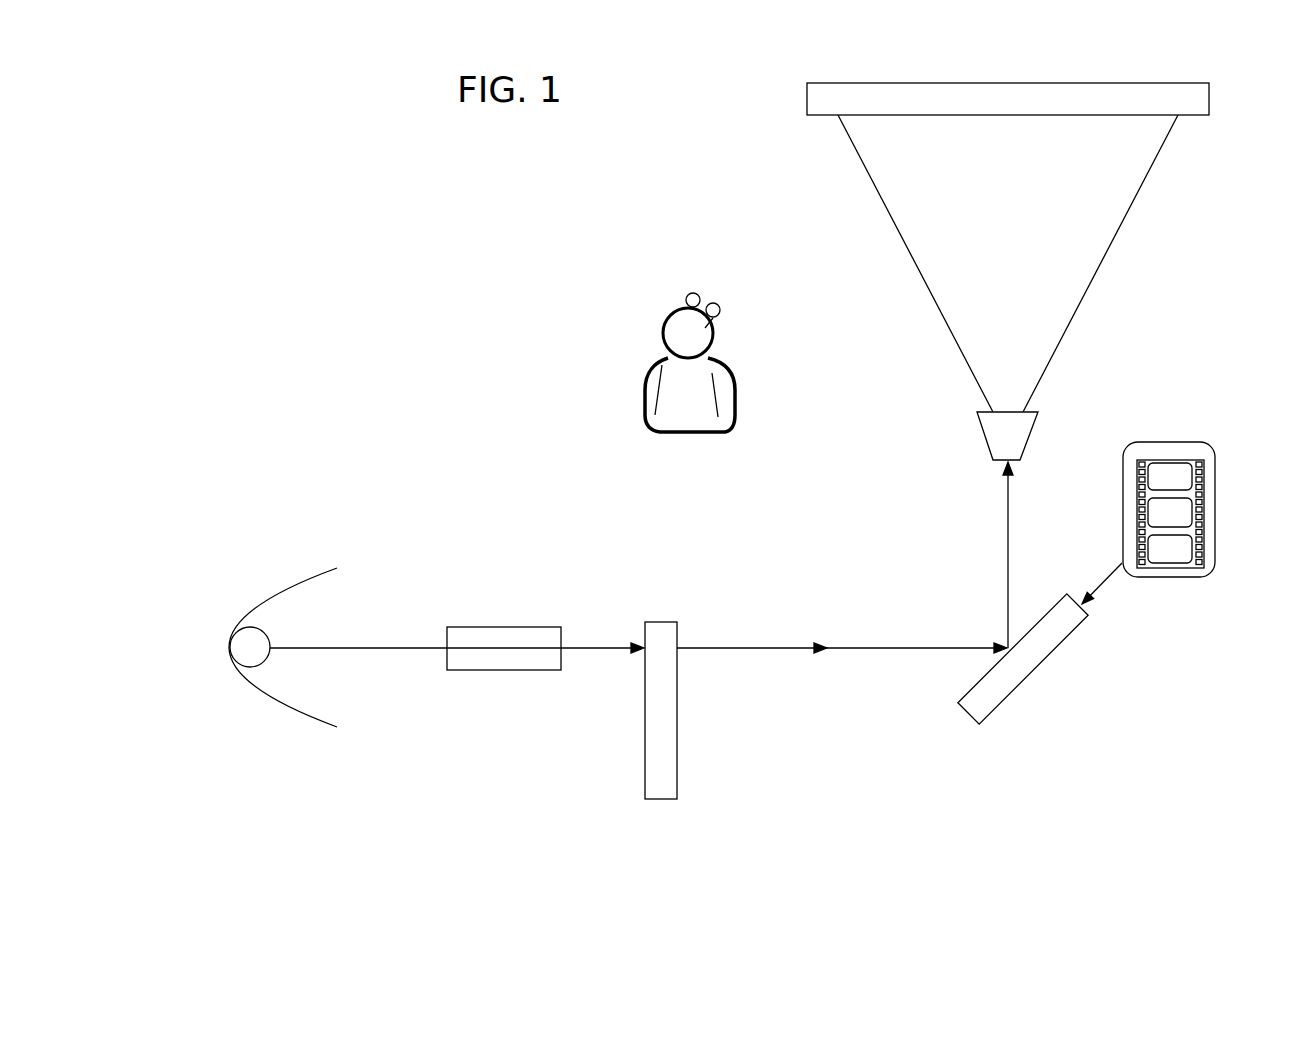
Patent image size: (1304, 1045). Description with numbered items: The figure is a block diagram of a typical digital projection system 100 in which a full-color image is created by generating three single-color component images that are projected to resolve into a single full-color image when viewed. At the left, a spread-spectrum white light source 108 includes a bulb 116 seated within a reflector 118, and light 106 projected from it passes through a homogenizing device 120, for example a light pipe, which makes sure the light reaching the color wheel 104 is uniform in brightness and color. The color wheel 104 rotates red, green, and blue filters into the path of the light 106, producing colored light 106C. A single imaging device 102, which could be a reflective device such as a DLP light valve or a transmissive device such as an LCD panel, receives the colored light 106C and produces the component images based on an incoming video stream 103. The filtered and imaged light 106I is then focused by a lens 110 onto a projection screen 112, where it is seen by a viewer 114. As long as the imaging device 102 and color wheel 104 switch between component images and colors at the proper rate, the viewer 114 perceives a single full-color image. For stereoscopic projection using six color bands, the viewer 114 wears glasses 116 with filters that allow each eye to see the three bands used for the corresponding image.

The digital projection system 100 is at (400, 201).
The imaging device 102 is at (1048, 688).
The incoming video stream 103 is at (1215, 540).
The color wheel 104 is at (687, 744).
The light 106 is at (388, 639).
The colored light 106C is at (767, 634).
The filtered and imaged light 106I is at (996, 555).
The spread-spectrum light source 108 is at (230, 580).
The lens 110 is at (1053, 440).
The projection screen 112 is at (1106, 74).
The viewer 114 is at (690, 387).
The bulb 116 is at (678, 283).
The reflector 118 is at (338, 558).
The homogenizing device 120 is at (489, 690).